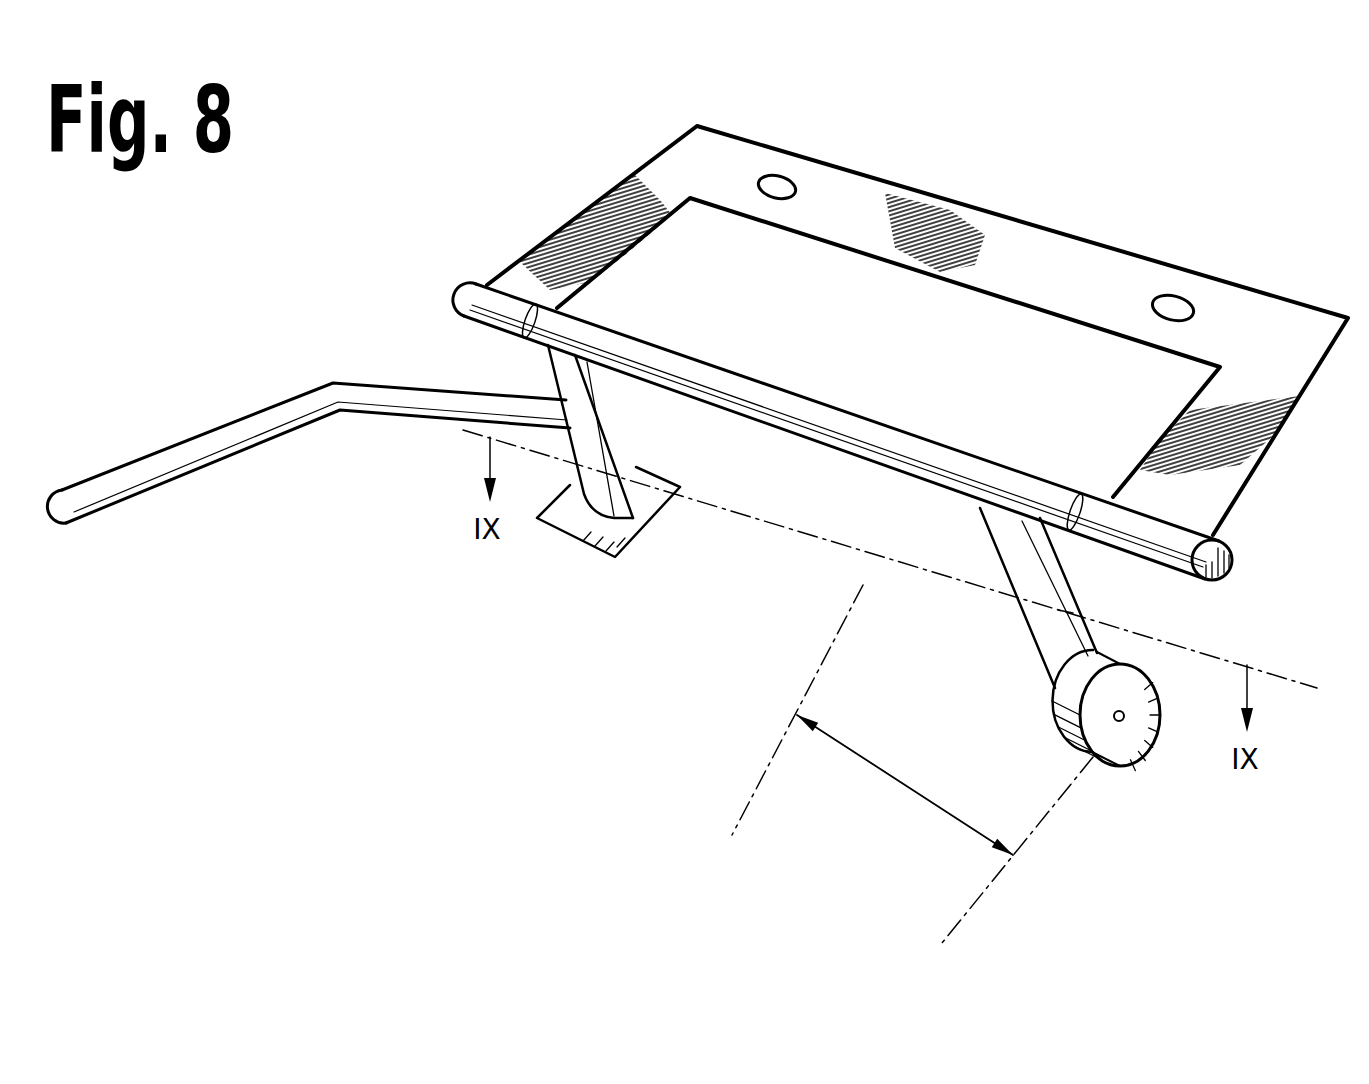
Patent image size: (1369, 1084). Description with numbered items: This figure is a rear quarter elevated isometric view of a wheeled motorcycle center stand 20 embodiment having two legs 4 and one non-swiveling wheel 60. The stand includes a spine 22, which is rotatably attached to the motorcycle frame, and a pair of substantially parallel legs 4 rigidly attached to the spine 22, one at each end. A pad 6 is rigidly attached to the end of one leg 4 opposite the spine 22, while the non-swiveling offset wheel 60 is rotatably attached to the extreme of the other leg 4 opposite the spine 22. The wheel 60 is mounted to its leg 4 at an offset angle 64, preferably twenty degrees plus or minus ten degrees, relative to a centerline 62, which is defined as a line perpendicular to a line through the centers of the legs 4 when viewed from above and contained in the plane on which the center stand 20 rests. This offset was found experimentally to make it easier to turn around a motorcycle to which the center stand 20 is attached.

The wheeled center stand 20 is at (1155, 182).
The spine 22 is at (807, 412).
The leg 4 is at (1024, 563).
The pad 6 is at (558, 516).
The non-swiveling offset wheel 60 is at (1150, 753).
The centerline 62 is at (820, 662).
The offset angle 64 is at (890, 772).